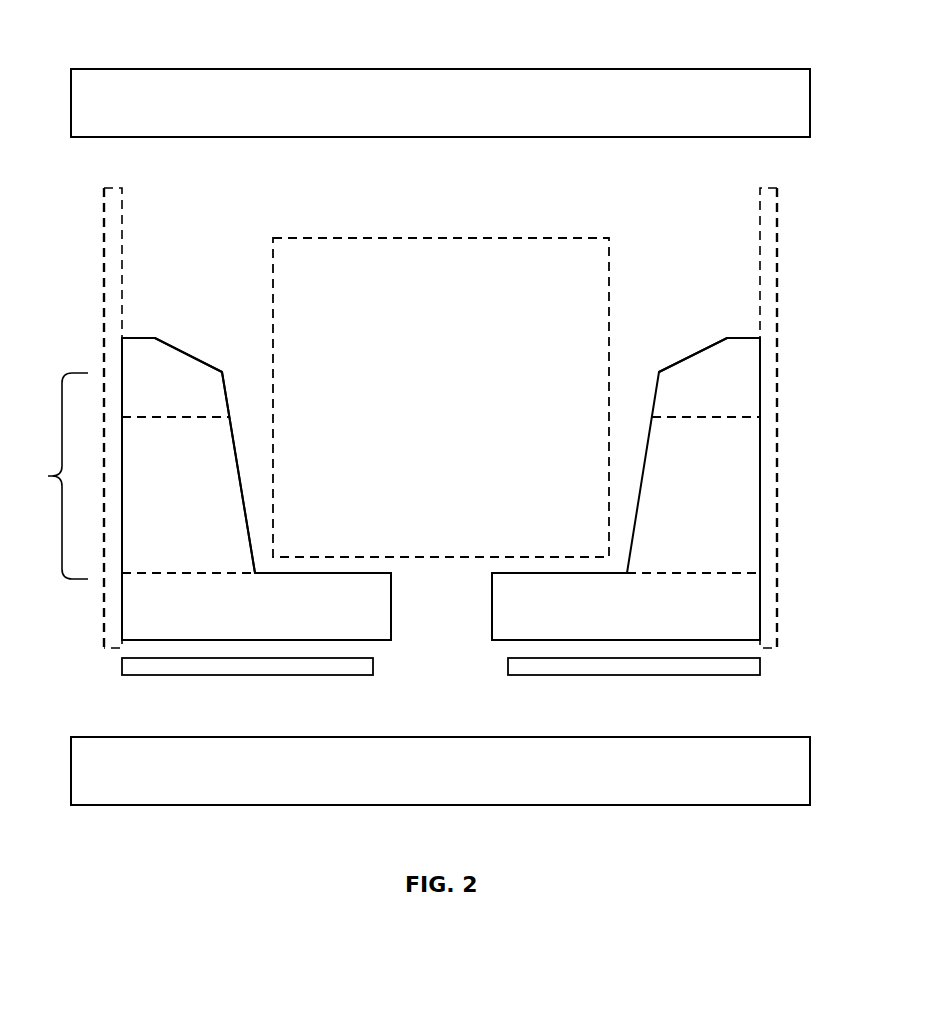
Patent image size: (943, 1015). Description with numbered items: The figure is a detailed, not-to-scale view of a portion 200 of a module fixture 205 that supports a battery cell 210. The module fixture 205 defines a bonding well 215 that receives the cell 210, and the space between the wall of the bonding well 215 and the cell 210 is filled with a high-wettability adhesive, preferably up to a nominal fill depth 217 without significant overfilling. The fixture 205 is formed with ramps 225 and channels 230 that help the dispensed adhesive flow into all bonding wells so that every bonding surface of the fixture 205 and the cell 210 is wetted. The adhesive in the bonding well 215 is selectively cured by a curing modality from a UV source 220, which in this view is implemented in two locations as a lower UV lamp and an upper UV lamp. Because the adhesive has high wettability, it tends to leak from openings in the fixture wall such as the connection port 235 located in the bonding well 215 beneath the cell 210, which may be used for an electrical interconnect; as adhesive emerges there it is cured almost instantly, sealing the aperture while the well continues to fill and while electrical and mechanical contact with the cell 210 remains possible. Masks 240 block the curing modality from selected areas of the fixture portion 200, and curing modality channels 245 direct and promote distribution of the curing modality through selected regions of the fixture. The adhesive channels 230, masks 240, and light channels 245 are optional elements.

The portion of module fixture 200 is at (728, 47).
The module fixture 205 is at (139, 337).
The battery cell 210 is at (460, 408).
The bonding well 215 is at (255, 389).
The nominal fill depth 217 is at (48, 476).
The UV source 220 is at (122, 138).
The ramp 225 is at (693, 352).
The channel 230 is at (203, 513).
The connection port 235 is at (425, 626).
The mask 240 is at (173, 676).
The curing modality channel 245 is at (123, 272).